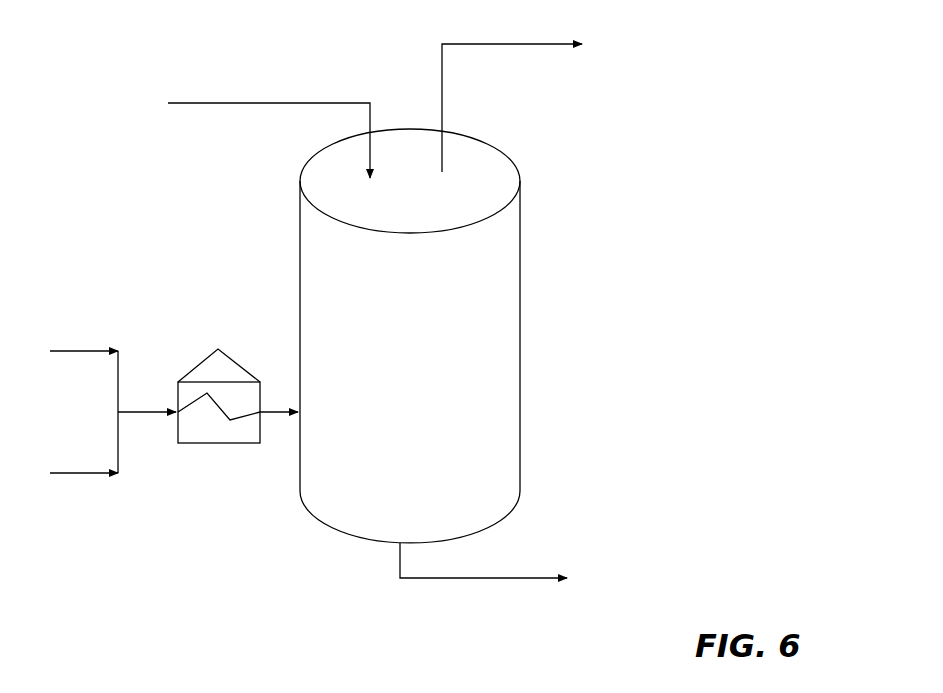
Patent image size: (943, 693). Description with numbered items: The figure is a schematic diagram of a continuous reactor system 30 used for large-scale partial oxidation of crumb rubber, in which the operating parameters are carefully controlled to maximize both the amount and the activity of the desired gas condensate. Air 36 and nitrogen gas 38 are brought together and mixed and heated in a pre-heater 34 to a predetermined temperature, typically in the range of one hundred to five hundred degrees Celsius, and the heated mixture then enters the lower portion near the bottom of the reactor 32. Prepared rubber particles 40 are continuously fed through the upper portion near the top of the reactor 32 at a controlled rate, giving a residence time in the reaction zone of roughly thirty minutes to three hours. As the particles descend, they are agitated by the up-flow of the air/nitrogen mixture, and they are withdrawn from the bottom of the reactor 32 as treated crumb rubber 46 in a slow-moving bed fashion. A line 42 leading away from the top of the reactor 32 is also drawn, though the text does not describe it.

The continuous reactor system 30 is at (140, 232).
The reactor 32 is at (521, 284).
The pre-heater 34 is at (236, 361).
The air 36 is at (69, 351).
The nitrogen gas 38 is at (69, 473).
The prepared rubber particles 40 is at (253, 135).
The top outlet line 42 is at (527, 105).
The treated crumb rubber 46 is at (502, 567).